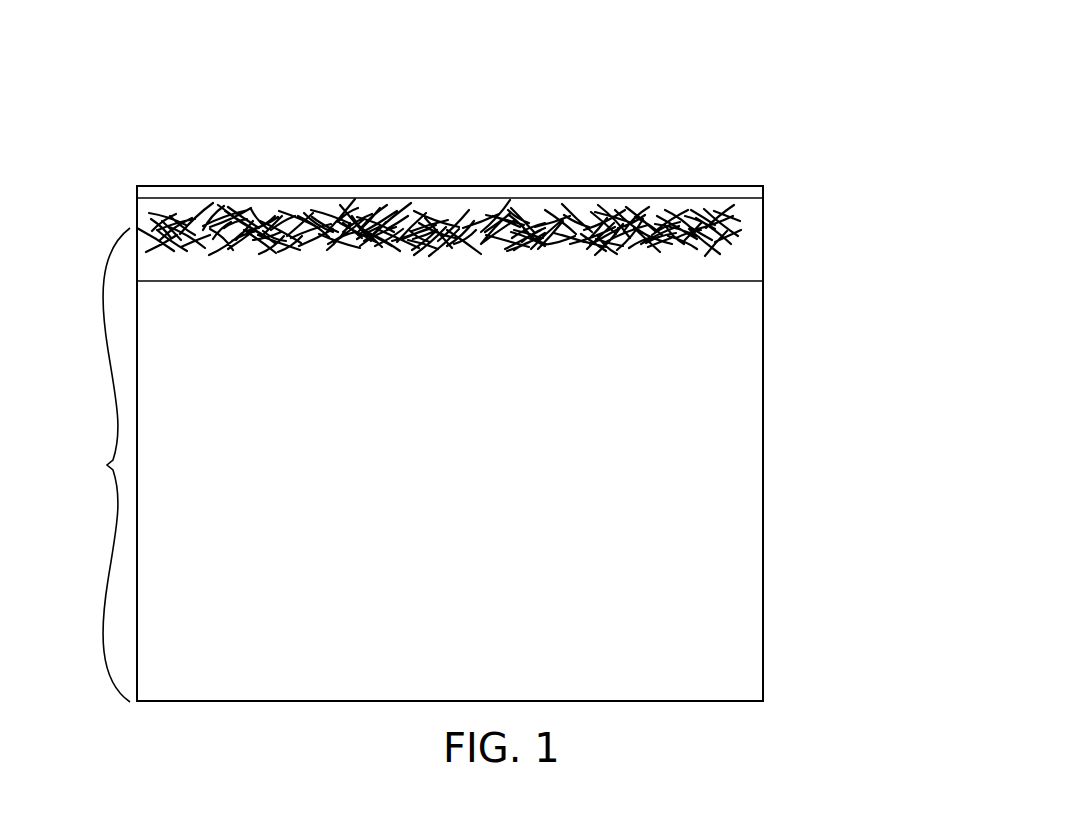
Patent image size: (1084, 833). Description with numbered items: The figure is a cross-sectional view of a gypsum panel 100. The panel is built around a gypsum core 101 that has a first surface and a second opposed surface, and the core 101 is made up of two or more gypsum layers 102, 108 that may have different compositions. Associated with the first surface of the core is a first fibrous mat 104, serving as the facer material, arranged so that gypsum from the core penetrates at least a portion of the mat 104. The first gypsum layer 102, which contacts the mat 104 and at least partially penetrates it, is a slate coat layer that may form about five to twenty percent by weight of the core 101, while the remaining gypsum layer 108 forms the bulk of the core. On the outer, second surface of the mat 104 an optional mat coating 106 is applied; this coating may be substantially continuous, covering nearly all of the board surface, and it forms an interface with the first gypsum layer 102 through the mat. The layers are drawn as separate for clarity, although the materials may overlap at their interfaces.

The gypsum panel 100 is at (494, 114).
The gypsum core 101 is at (104, 464).
The first gypsum layer 102 is at (754, 268).
The first fibrous mat 104 is at (752, 240).
The mat coating 106 is at (747, 186).
The gypsum layer 108 is at (745, 470).